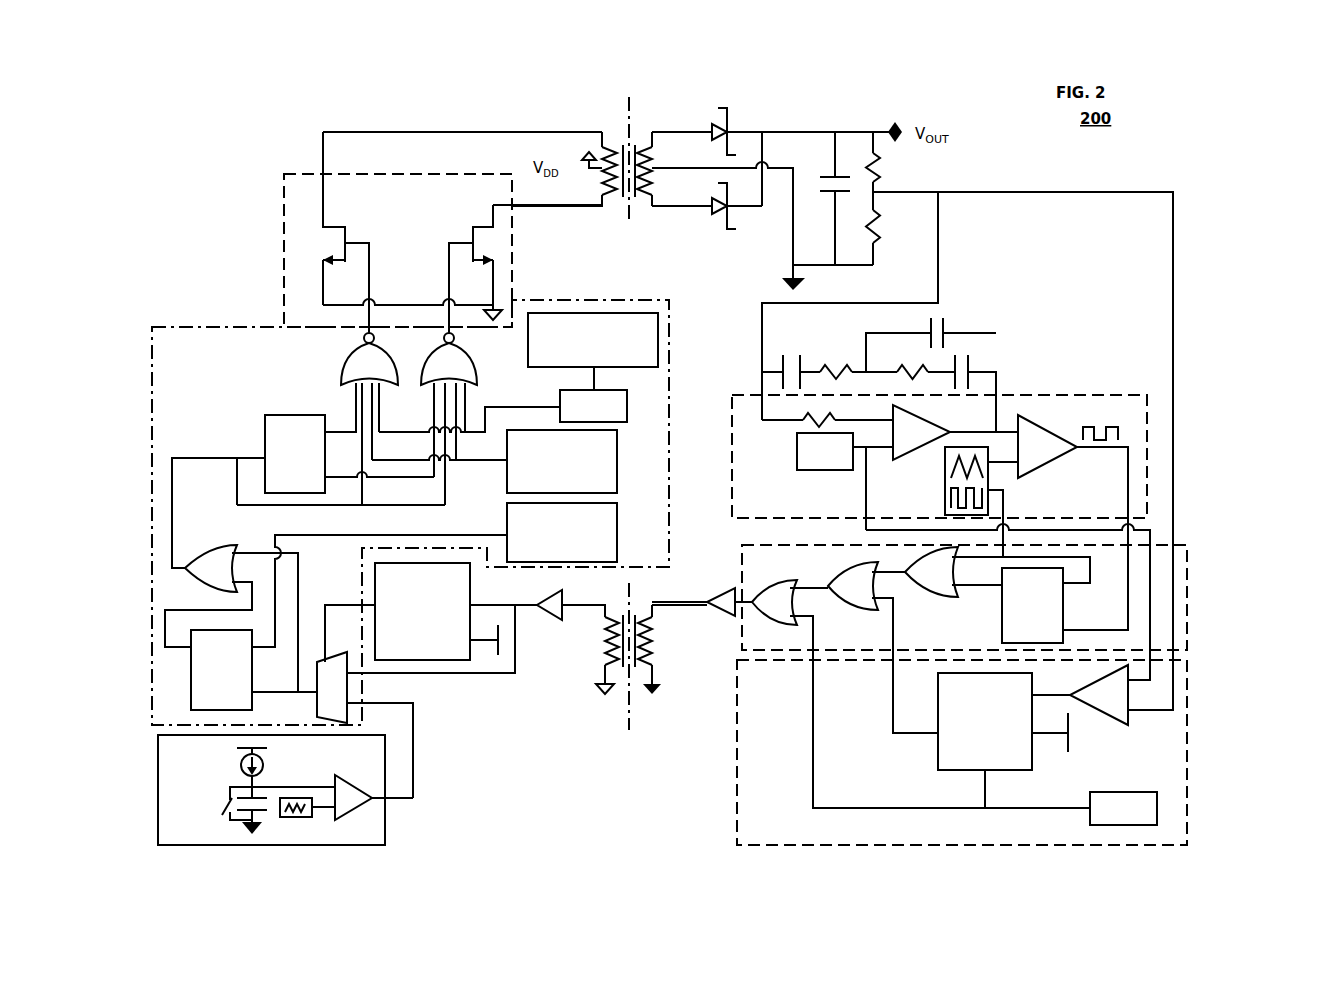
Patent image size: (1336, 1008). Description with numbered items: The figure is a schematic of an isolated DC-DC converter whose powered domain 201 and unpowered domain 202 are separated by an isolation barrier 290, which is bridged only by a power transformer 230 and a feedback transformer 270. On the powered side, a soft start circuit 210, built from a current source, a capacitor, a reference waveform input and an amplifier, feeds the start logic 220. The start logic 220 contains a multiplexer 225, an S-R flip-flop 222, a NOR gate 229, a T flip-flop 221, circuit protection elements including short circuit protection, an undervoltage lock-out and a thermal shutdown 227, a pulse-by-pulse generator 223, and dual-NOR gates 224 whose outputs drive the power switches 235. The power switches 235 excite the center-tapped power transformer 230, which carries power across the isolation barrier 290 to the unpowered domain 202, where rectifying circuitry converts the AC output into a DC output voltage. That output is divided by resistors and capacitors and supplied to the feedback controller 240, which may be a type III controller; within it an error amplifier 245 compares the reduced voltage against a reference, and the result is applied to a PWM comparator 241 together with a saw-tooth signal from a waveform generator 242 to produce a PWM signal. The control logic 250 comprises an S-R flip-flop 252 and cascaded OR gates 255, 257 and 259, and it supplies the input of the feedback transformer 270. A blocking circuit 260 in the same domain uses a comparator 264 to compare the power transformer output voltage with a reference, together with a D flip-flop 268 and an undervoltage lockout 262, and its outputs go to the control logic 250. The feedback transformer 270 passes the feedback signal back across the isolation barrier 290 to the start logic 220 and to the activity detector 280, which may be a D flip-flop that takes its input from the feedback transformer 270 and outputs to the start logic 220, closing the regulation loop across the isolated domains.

The powered domain 201 is at (457, 100).
The unpowered domain 202 is at (816, 100).
The soft start circuit 210 is at (388, 818).
The start logic 220 is at (240, 325).
The T flip-flop 221 is at (262, 440).
The S-R flip-flop 222 is at (349, 622).
The pulse-by-pulse generator 223 is at (562, 532).
The dual-NOR gates 224 is at (338, 378).
The multiplexer 225 is at (416, 701).
The thermal shutdown 227 is at (562, 461).
The NOR gate 229 is at (210, 552).
The power transformer 230 is at (676, 216).
The power switches 235 is at (443, 232).
The feedback controller 240 is at (1073, 392).
The PWM comparator 241 is at (1035, 476).
The waveform generator 242 is at (945, 508).
The error amplifier 245 is at (955, 433).
The control logic 250 is at (1200, 570).
The S-R flip-flop 252 is at (1065, 605).
The OR gate 255 is at (997, 572).
The OR gate 257 is at (883, 647).
The OR gate 259 is at (912, 694).
The blocking circuit 260 is at (962, 752).
The undervoltage lockout (UVLO) 262 is at (1142, 790).
The comparator 264 is at (1108, 725).
The D flip-flop 268 is at (1004, 740).
The feedback transformer 270 is at (676, 664).
The activity detector 280 is at (428, 633).
The isolation barrier 290 is at (573, 750).